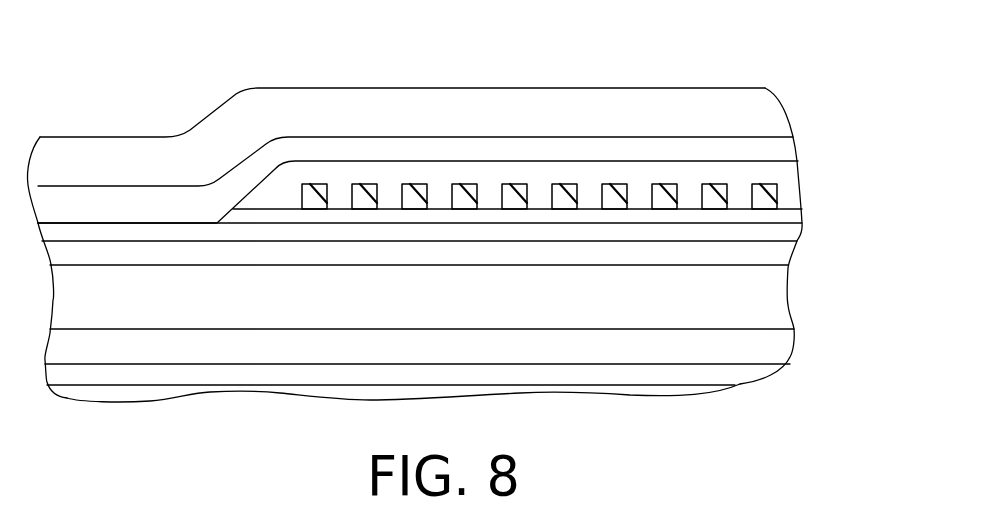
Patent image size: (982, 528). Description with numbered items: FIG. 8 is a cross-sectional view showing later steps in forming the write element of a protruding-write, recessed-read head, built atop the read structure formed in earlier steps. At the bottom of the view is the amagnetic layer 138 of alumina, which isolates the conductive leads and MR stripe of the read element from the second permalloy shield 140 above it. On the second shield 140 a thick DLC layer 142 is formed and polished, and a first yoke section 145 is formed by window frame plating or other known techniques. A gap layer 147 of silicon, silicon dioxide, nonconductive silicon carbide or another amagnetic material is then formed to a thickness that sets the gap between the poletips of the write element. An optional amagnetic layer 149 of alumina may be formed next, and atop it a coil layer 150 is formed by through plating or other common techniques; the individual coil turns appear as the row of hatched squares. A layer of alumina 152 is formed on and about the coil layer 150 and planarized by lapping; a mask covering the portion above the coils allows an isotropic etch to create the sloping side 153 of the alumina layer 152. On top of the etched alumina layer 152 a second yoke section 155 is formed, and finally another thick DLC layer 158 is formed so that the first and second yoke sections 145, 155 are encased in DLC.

The amagnetic layer 138 is at (767, 364).
The second permalloy shield 140 is at (782, 330).
The DLC layer 142 is at (777, 268).
The first yoke section 145 is at (783, 240).
The gap layer 147 is at (783, 224).
The amagnetic layer 149 is at (692, 208).
The coil layer 150 is at (607, 207).
The alumina layer 152 is at (490, 173).
The sloping side 153 is at (258, 178).
The second yoke section 155 is at (382, 137).
The DLC layer 158 is at (94, 136).